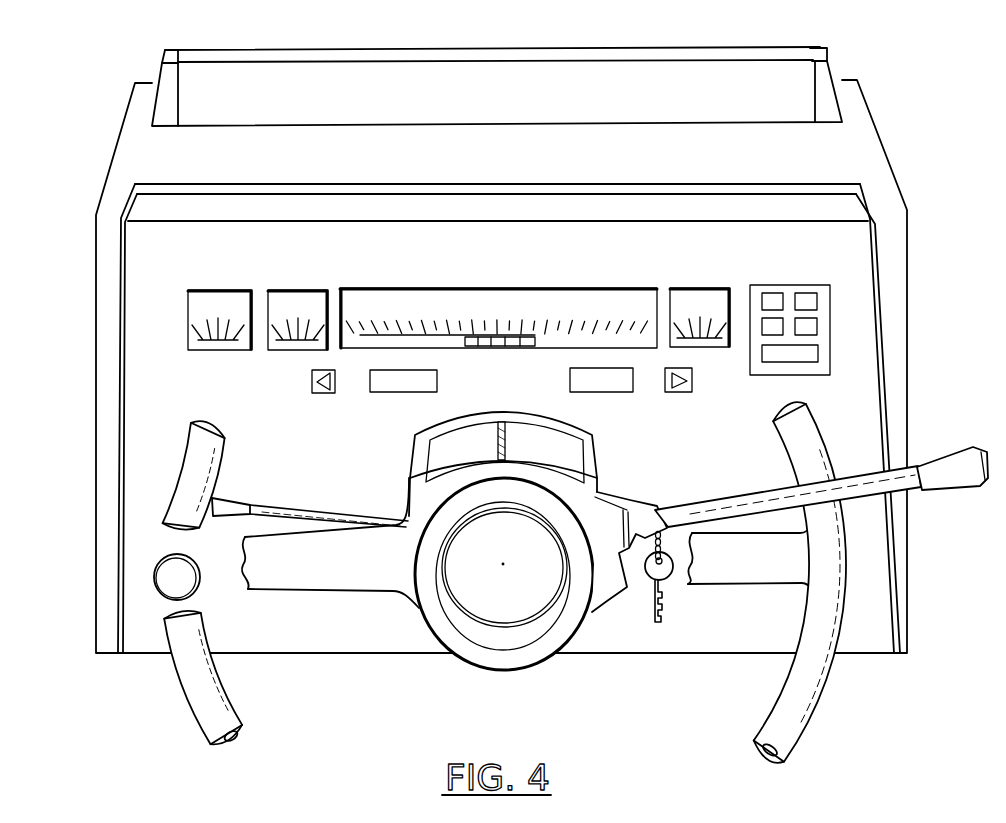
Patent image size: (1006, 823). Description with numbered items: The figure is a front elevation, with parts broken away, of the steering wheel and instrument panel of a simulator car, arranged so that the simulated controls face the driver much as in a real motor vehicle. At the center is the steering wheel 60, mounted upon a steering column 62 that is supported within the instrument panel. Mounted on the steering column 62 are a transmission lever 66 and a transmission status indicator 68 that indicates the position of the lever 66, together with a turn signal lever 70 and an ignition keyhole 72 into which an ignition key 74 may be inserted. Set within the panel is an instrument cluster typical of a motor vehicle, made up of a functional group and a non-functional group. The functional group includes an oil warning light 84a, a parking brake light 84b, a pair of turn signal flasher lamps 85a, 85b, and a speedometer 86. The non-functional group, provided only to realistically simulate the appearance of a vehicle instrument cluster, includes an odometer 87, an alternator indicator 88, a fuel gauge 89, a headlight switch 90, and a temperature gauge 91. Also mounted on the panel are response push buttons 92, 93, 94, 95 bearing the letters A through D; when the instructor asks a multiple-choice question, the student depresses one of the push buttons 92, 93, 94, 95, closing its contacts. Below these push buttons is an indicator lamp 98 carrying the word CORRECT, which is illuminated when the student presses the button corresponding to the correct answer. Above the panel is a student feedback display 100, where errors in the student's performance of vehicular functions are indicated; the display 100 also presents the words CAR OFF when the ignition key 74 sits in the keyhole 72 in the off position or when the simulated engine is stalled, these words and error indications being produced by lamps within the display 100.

The student feedback display 100 is at (432, 80).
The fuel gauge 89 is at (228, 290).
The alternator indicator 88 is at (297, 290).
The speedometer 86 is at (487, 288).
The odometer 87 is at (503, 348).
The temperature gauge 91 is at (690, 288).
The response push button 92 is at (778, 292).
The response push button 93 is at (805, 292).
The response push button 94 is at (762, 330).
The response push button 95 is at (818, 326).
The indicator lamp 98 is at (812, 362).
The turn signal flasher lamp 85a is at (323, 393).
The oil warning light 84a is at (412, 392).
The parking brake light 84b is at (610, 392).
The turn signal flasher lamp 85b is at (685, 392).
The headlight switch 90 is at (165, 582).
The steering wheel 60 is at (190, 447).
The steering column 62 is at (585, 622).
The transmission status indicator 68 is at (528, 425).
The turn signal lever 70 is at (273, 512).
The ignition keyhole 72 is at (630, 500).
The ignition key 74 is at (663, 523).
The transmission lever 66 is at (958, 460).